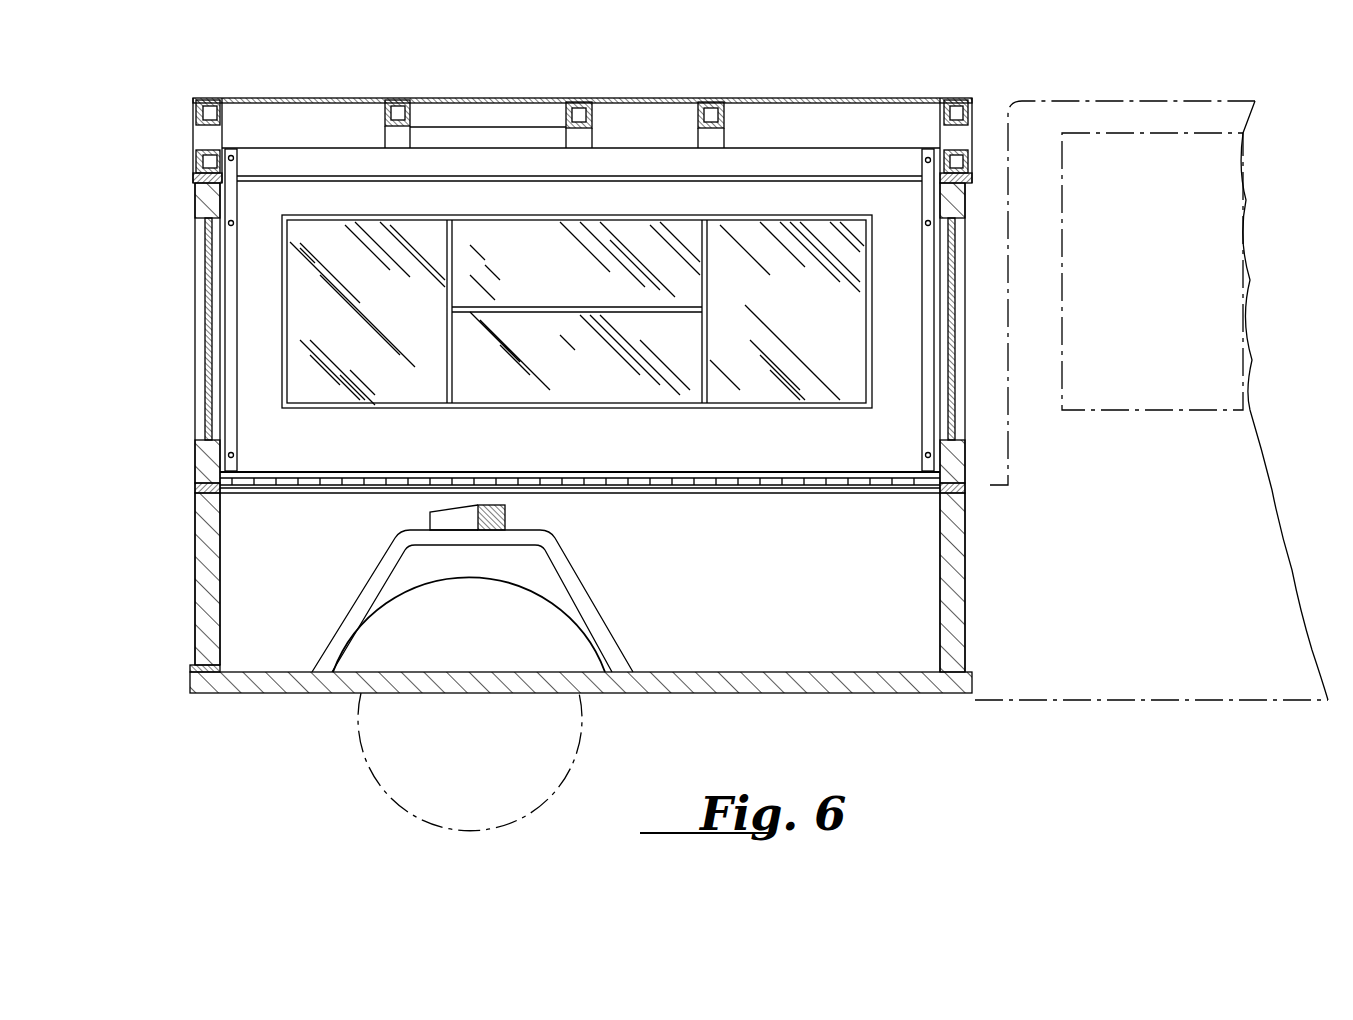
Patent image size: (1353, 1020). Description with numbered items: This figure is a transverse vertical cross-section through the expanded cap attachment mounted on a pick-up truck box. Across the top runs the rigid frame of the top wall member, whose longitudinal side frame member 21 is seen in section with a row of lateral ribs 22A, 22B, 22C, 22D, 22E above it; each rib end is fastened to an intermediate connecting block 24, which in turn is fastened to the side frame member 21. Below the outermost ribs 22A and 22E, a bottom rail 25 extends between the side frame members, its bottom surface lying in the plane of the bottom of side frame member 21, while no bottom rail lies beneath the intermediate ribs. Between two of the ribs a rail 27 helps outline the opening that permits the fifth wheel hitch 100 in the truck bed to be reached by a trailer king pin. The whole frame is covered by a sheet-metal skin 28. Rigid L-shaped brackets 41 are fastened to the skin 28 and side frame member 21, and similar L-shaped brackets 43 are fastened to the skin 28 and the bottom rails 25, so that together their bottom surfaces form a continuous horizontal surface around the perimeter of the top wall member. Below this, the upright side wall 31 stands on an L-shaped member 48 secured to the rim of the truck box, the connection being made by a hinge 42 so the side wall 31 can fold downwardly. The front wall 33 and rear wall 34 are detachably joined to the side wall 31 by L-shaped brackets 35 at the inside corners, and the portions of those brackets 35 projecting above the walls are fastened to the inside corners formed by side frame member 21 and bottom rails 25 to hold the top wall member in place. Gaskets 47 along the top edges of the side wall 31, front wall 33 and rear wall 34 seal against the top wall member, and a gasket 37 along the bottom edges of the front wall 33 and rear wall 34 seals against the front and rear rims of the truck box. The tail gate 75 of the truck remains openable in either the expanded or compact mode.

The side frame member 21 is at (820, 165).
The lateral rib 22A is at (222, 107).
The lateral rib 22B is at (410, 108).
The lateral rib 22C is at (592, 112).
The lateral rib 22D is at (724, 112).
The lateral rib 22E is at (932, 105).
The intermediate connecting block 24 is at (222, 132).
The bottom rail 25 is at (200, 153).
The rail 27 is at (515, 117).
The skin 28 is at (345, 98).
The side wall 31 is at (648, 445).
The front wall 33 is at (965, 465).
The rear wall 34 is at (200, 462).
The L-shaped bracket 35 is at (230, 440).
The gasket 37 is at (198, 490).
The L-shaped bracket 41 is at (750, 178).
The hinge 42 is at (417, 472).
The L-shaped bracket 43 is at (200, 165).
The gasket 47 is at (195, 183).
The L-shaped member 48 is at (730, 490).
The tail gate 75 is at (195, 572).
The fifth wheel hitch 100 is at (505, 513).